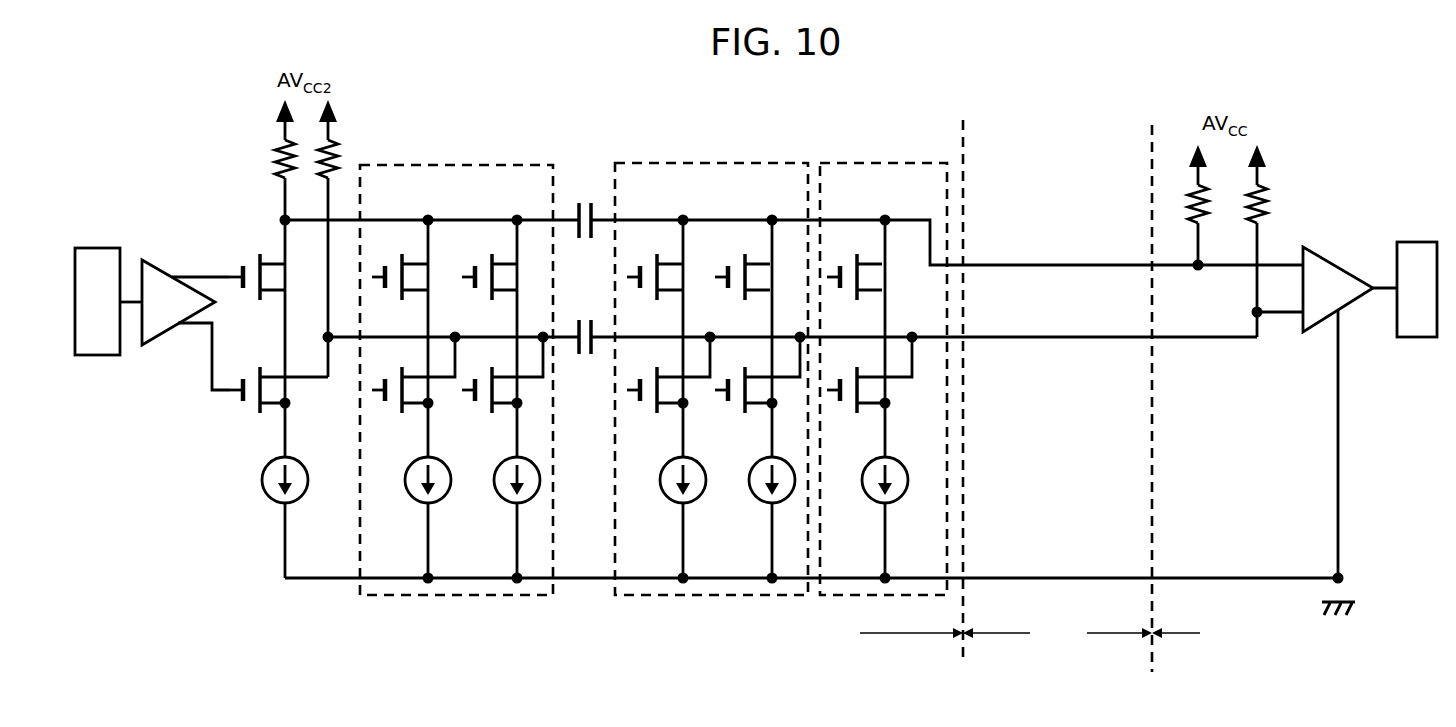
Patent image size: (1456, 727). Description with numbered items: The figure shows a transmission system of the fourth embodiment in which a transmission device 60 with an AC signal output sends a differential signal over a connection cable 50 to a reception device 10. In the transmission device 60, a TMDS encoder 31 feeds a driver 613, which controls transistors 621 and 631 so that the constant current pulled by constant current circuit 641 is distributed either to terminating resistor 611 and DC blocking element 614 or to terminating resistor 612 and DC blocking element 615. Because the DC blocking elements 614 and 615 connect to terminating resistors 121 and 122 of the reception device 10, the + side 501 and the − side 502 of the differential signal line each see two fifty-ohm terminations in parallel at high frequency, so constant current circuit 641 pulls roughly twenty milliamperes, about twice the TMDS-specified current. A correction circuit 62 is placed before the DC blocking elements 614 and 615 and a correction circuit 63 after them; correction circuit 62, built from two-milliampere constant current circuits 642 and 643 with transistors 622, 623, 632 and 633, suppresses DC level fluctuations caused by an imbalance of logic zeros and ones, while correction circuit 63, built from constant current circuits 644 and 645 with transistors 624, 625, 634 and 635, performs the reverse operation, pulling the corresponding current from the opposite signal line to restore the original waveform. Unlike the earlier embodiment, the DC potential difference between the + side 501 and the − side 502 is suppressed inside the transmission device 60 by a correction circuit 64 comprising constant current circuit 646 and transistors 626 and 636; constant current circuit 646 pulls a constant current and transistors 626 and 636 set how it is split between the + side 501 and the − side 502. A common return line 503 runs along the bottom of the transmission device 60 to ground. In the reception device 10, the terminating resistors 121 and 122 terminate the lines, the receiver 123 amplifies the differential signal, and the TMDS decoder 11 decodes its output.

The TMDS encoder 31 is at (95, 247).
The TMDS decoder 11 is at (1420, 242).
The terminating resistor 611 is at (268, 158).
The terminating resistor 612 is at (341, 160).
The driver 613 is at (168, 328).
The DC blocking element 614 is at (582, 200).
The DC blocking element 615 is at (582, 318).
The transistor 621 is at (254, 256).
The transistor 631 is at (250, 413).
The constant current circuit 641 is at (265, 500).
The correction circuit 62 is at (448, 165).
The correction circuit 63 is at (702, 165).
The correction circuit 64 is at (880, 165).
The transistor 622 is at (391, 255).
The transistor 623 is at (481, 255).
The transistor 624 is at (649, 255).
The transistor 625 is at (736, 255).
The transistor 626 is at (849, 255).
The transistor 632 is at (398, 413).
The transistor 633 is at (485, 413).
The transistor 634 is at (653, 413).
The transistor 635 is at (740, 413).
The transistor 636 is at (855, 413).
The constant current circuit 642 is at (408, 500).
The constant current circuit 643 is at (486, 500).
The constant current circuit 644 is at (663, 500).
The constant current circuit 645 is at (756, 500).
The constant current circuit 646 is at (868, 500).
The + side of the differential signal line 501 is at (1043, 272).
The − side of the differential signal line 502 is at (1040, 340).
The ground line 503 is at (1037, 577).
The terminating resistor 121 is at (1178, 200).
The terminating resistor 122 is at (1280, 195).
The receiver 123 is at (1352, 308).
The transmission device 60 is at (890, 634).
The connection cable 50 is at (1057, 396).
The reception device 10 is at (1194, 634).